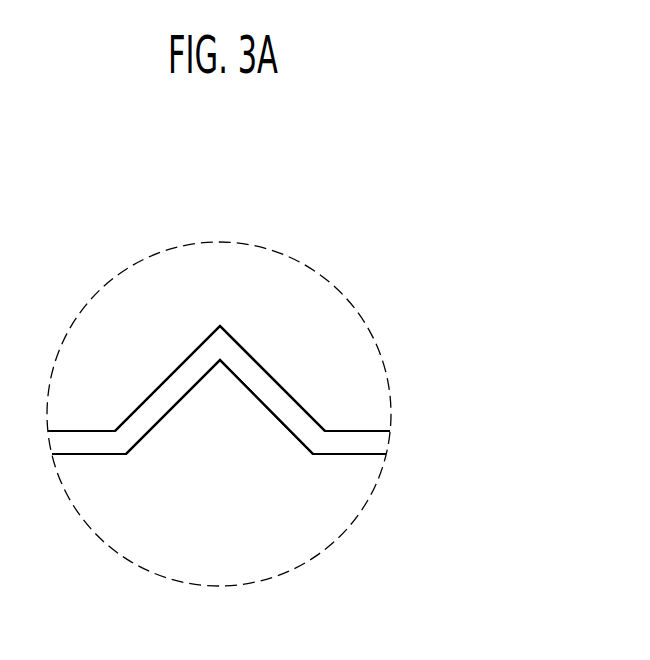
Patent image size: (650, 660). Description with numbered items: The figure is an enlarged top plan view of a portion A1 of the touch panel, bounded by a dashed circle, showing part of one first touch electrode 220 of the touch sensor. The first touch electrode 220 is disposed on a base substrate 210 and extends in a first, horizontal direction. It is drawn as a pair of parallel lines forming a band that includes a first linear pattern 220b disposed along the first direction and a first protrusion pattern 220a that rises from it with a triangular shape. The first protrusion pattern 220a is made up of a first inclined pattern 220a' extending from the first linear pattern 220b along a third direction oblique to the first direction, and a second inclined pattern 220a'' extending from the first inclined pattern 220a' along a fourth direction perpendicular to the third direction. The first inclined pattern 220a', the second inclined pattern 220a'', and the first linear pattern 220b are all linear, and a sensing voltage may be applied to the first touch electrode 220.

The base substrate 210 is at (255, 484).
The first touch electrode 220 is at (350, 154).
The first protrusion pattern 220a is at (220, 300).
The first inclined pattern 220a' is at (167, 308).
The second inclined pattern 220a'' is at (272, 308).
The first linear pattern 220b is at (355, 431).
The portion A1 is at (375, 337).